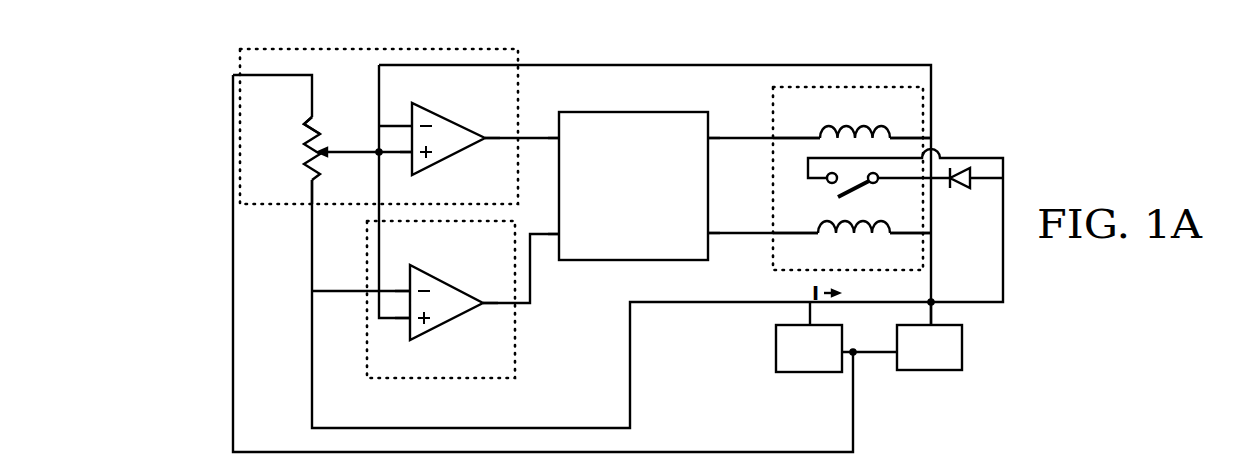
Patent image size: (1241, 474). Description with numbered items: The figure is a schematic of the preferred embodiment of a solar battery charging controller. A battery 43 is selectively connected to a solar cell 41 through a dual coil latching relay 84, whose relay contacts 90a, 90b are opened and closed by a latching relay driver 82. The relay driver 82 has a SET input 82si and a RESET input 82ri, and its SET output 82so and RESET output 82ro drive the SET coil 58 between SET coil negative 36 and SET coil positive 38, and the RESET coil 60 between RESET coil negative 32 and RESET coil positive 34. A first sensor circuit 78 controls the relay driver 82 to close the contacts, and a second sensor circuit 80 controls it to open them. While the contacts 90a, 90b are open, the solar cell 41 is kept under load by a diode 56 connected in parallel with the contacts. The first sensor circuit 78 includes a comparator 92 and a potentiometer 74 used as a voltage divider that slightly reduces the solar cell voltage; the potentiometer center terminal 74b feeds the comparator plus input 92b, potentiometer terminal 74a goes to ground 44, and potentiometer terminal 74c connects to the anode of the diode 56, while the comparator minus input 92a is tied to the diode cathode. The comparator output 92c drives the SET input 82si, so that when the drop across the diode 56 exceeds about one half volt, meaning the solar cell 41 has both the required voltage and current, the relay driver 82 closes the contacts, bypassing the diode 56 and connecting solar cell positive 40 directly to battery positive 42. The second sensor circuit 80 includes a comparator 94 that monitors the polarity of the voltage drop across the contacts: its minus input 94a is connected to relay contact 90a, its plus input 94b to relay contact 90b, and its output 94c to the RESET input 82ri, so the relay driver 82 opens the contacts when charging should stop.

The first sensor circuit 78 is at (373, 44).
The second sensor circuit 80 is at (435, 385).
The relay driver 82 is at (633, 106).
The relay driver SET input 82si is at (560, 128).
The relay driver SET output 82so is at (708, 136).
The relay driver RESET input 82ri is at (586, 230).
The relay driver RESET output 82ro is at (708, 232).
The relay 84 is at (766, 115).
The potentiometer 74 is at (288, 162).
The potentiometer terminal 74a is at (318, 128).
The potentiometer center terminal 74b is at (330, 158).
The potentiometer terminal 74c is at (310, 204).
The comparator 92 is at (448, 139).
The comparator minus input 92a is at (404, 126).
The comparator plus input 92b is at (404, 154).
The comparator output 92c is at (485, 136).
The comparator 94 is at (446, 302).
The comparator minus input 94a is at (402, 290).
The comparator plus input 94b is at (402, 320).
The comparator output 94c is at (485, 305).
The SET coil negative 36 is at (782, 138).
The SET coil 58 is at (882, 124).
The SET coil positive 38 is at (926, 136).
The RESET coil negative 32 is at (782, 234).
The RESET coil 60 is at (882, 236).
The RESET coil positive 34 is at (926, 258).
The relay contact 90a is at (827, 181).
The relay contact 90b is at (877, 184).
The diode 56 is at (962, 191).
The solar cell positive 40 is at (809, 320).
The solar cell 41 is at (767, 350).
The battery positive 42 is at (930, 320).
The battery 43 is at (972, 350).
The ground 44 is at (864, 354).